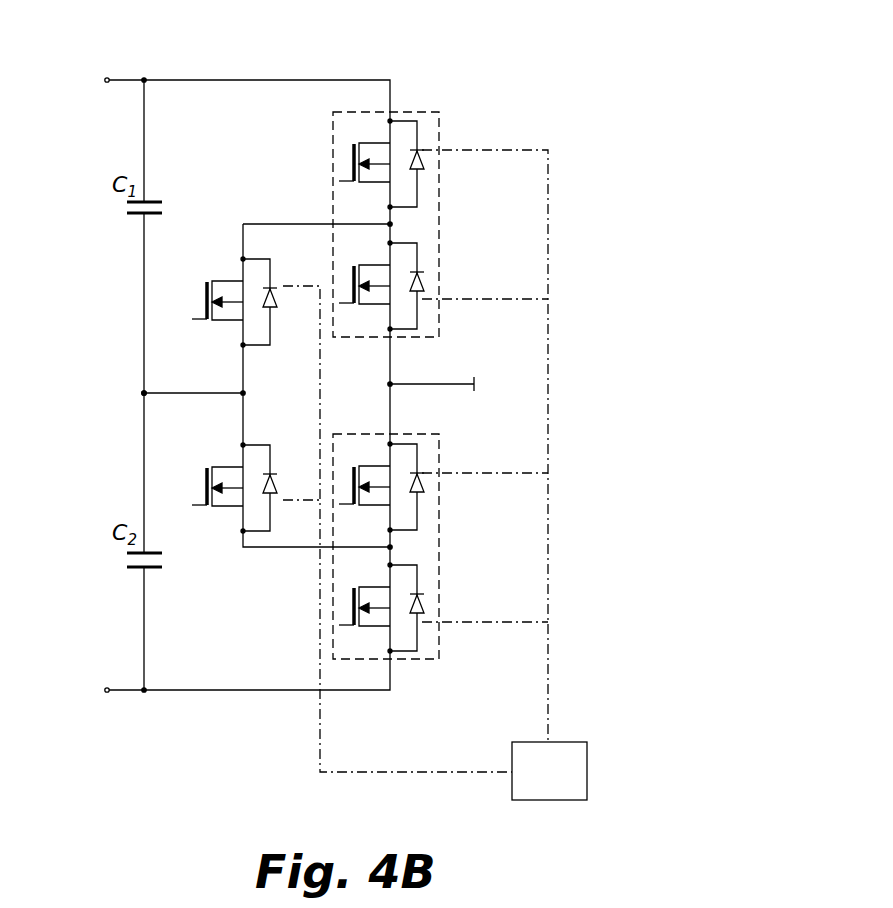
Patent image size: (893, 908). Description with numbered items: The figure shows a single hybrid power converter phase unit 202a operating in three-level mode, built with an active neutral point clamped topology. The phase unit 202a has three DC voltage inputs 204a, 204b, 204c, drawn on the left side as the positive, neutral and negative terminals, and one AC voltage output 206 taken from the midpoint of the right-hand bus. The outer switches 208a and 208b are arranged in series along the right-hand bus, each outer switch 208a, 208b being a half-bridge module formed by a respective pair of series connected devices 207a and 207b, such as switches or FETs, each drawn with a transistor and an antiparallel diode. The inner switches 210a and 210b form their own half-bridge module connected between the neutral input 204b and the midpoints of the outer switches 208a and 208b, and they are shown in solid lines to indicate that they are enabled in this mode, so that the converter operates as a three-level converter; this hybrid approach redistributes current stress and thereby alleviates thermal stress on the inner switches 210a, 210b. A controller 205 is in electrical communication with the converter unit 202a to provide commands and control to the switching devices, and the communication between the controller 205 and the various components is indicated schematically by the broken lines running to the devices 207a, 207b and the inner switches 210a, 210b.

The power converter phase unit 202a is at (354, 60).
The DC voltage input 204a is at (105, 92).
The DC voltage input 204b is at (137, 405).
The DC voltage input 204c is at (105, 702).
The controller 205 is at (435, 475).
The AC voltage output 206 is at (460, 389).
The series connected device 207a is at (422, 182).
The series connected device 207b is at (441, 318).
The outer switch 208a is at (410, 98).
The outer switch 208b is at (419, 675).
The inner switch 210a is at (237, 252).
The inner switch 210b is at (237, 518).